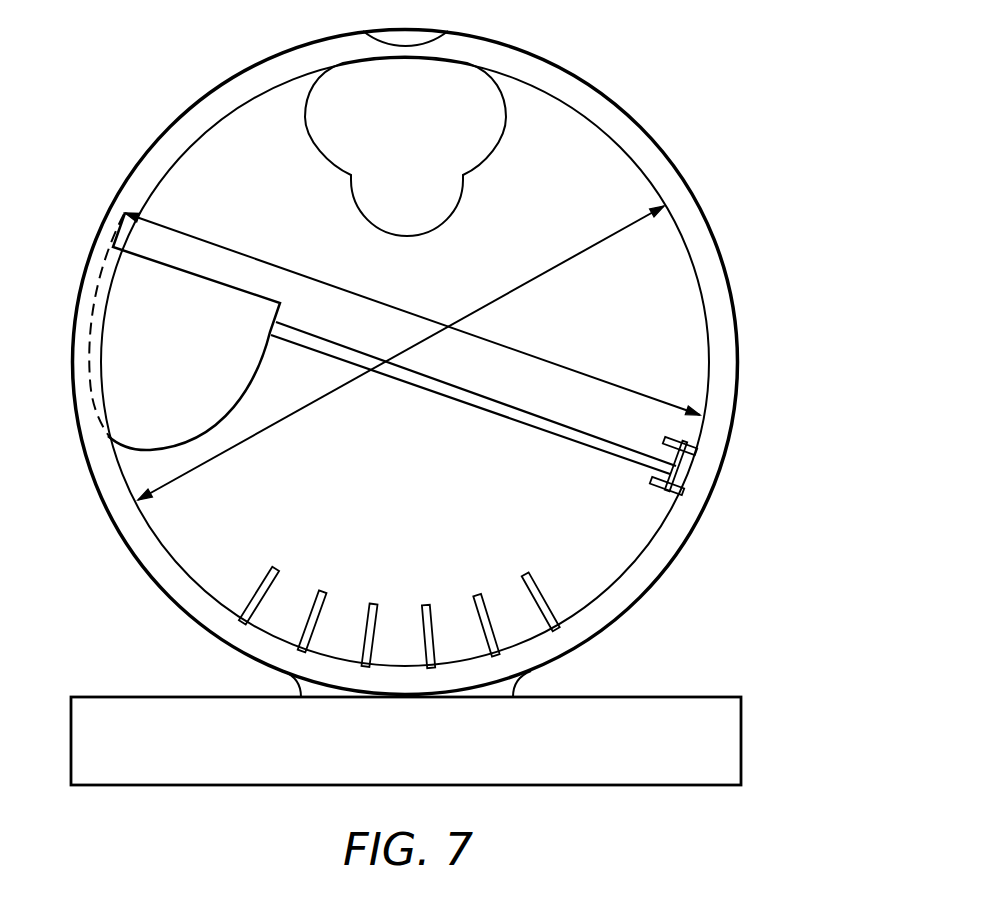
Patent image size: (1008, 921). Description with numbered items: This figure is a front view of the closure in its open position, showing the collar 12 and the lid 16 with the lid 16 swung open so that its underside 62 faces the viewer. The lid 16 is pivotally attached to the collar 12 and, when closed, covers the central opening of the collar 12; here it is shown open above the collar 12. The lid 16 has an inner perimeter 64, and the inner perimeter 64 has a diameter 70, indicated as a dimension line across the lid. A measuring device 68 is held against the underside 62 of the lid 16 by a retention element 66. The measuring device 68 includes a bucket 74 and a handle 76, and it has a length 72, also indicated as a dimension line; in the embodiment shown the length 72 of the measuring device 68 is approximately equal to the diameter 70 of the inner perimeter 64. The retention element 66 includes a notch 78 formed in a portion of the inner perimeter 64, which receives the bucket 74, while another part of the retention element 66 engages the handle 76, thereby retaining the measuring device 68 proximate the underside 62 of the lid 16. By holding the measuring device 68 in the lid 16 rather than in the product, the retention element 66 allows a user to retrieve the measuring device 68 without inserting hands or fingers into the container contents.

The collar 12 is at (717, 750).
The lid 16 is at (707, 213).
The underside 62 is at (550, 130).
The inner perimeter 64 is at (603, 128).
The retention element 66 is at (103, 263).
The measuring device 68 is at (147, 390).
The diameter 70 is at (260, 440).
The length 72 is at (273, 265).
The bucket 74 is at (152, 352).
The handle 76 is at (608, 442).
The notch 78 is at (107, 282).